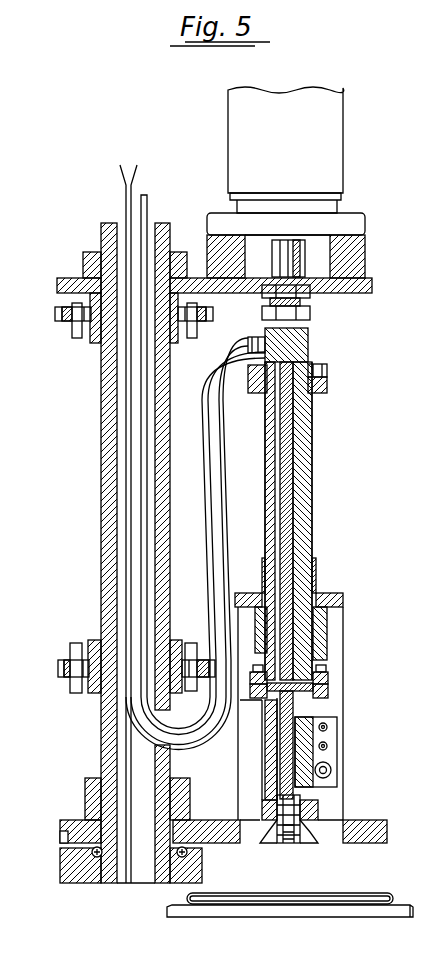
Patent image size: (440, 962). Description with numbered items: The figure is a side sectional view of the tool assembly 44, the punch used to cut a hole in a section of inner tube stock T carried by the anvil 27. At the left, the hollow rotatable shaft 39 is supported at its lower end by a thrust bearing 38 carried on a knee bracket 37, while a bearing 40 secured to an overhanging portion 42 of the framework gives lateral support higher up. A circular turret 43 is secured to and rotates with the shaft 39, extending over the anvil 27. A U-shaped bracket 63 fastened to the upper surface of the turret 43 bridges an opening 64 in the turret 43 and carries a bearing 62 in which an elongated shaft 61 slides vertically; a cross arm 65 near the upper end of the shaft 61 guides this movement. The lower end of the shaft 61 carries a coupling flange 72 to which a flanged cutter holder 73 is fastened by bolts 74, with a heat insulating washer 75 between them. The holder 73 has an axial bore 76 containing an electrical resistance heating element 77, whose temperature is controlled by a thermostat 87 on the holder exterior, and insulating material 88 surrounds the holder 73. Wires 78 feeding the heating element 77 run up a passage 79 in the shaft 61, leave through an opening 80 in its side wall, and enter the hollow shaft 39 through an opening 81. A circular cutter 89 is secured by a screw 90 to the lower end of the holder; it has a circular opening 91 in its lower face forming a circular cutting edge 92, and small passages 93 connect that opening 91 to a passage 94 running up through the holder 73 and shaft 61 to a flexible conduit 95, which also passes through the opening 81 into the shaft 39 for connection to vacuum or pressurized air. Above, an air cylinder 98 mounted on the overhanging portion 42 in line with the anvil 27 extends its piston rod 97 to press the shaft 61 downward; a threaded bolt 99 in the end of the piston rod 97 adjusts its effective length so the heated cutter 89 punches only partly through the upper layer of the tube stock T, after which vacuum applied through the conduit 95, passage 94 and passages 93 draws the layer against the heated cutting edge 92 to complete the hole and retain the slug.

The air cylinder 98 is at (333, 157).
The piston rod 97 is at (300, 262).
The overhanging portion 42 is at (202, 276).
The bearing 40 is at (88, 270).
The threaded bolt 99 is at (312, 313).
The opening 80 is at (300, 360).
The cross arm 65 is at (327, 386).
The tool assembly 44 is at (332, 457).
The elongated shaft 61 is at (312, 493).
The passage 79 is at (300, 521).
The bearing 62 is at (316, 570).
The U-shaped bracket 63 is at (340, 598).
The bolts 74 is at (325, 667).
The coupling flange 72 is at (330, 674).
The washer 75 is at (330, 686).
The cutter holder 73 is at (330, 693).
The thermostat 87 is at (338, 726).
The heating element 77 is at (330, 740).
The axial bore 76 is at (222, 498).
The flexible conduit 95 is at (209, 566).
The opening 81 is at (168, 720).
The wires 78 is at (282, 700).
The insulating material 88 is at (262, 790).
The hollow rotatable shaft 39 is at (100, 736).
The small passages 93 is at (305, 832).
The opening 64 is at (300, 826).
The turret 43 is at (386, 830).
The passage 94 is at (266, 832).
The circular cutter 89 is at (272, 838).
The circular opening 91 is at (288, 846).
The screw 90 is at (292, 845).
The circular cutting edge 92 is at (306, 836).
The inner tube stock T is at (384, 893).
The anvil 27 is at (290, 915).
The knee bracket 37 is at (62, 884).
The thrust bearing 38 is at (91, 882).